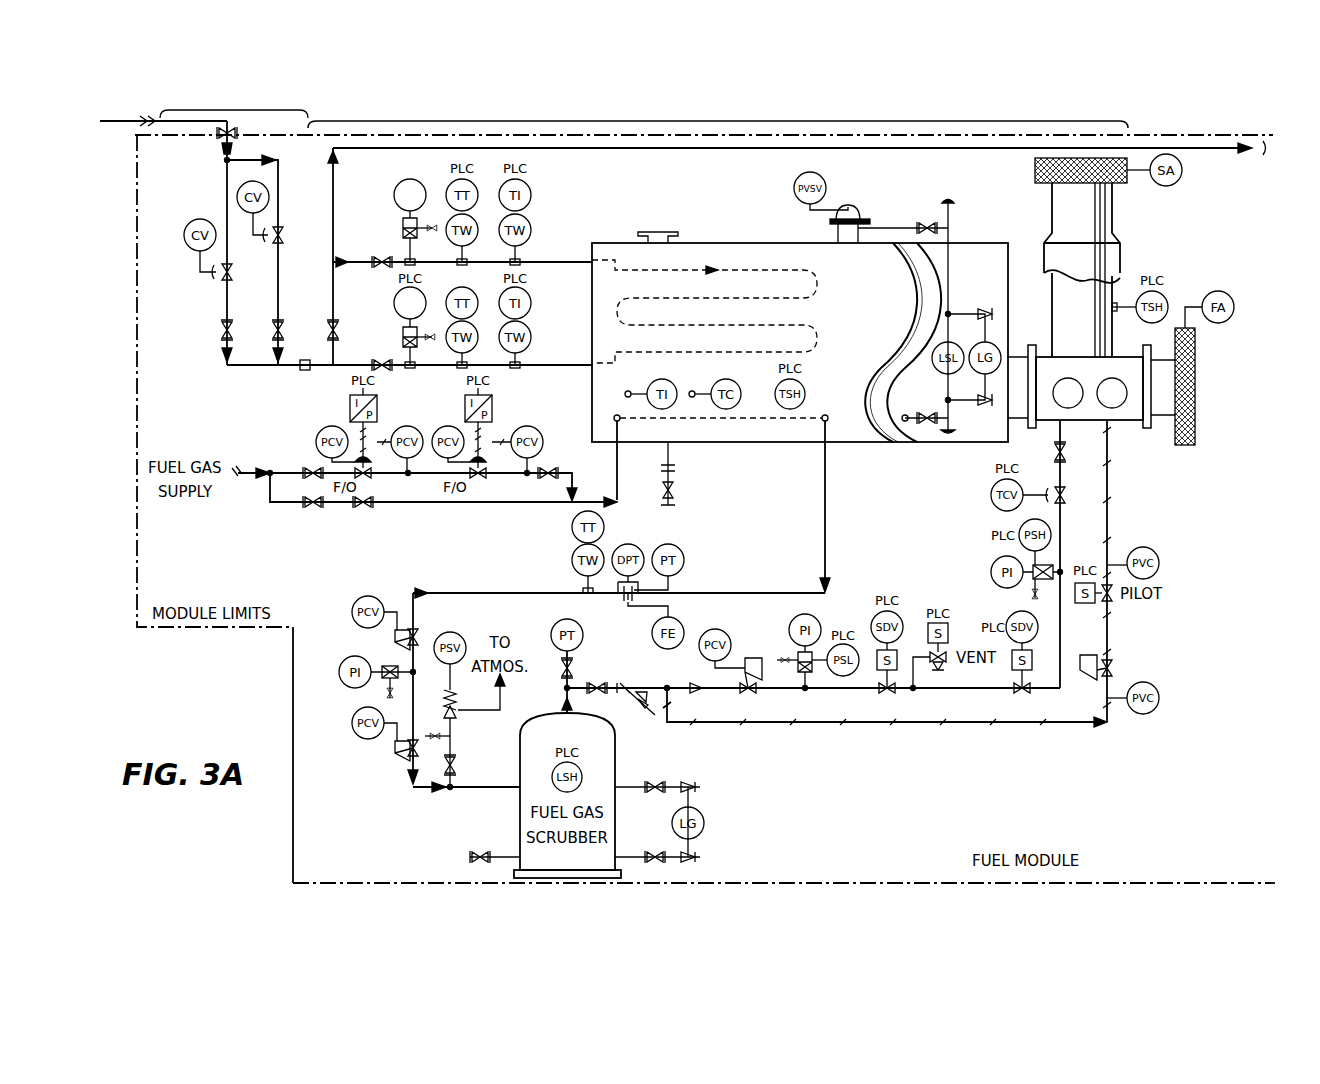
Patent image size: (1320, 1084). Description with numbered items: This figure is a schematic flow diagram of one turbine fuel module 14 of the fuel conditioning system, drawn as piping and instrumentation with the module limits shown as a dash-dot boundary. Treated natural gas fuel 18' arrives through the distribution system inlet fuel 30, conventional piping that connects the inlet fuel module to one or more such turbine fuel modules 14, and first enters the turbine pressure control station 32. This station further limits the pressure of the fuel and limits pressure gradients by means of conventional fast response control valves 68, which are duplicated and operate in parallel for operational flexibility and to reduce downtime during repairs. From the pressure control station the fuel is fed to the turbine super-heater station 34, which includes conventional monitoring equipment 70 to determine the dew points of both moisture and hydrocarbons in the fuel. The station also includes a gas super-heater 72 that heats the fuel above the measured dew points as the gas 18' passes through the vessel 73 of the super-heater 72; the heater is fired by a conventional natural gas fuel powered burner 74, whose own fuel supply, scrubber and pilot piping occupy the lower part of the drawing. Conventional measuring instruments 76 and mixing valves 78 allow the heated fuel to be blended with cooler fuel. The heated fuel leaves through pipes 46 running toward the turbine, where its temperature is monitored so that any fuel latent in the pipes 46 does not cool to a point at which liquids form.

The turbine fuel module 14 is at (1160, 124).
The distribution system inlet fuel 30 is at (126, 122).
The turbine pressure control station 32 is at (230, 110).
The turbine super-heater station 34 is at (737, 119).
The pipes 46 is at (713, 149).
The fast response control valves 68 is at (283, 230).
The monitoring equipment 70 is at (405, 340).
The gas super-heater 72 is at (864, 440).
The vessel 73 is at (695, 248).
The burner 74 is at (1128, 426).
The measuring instruments 76 is at (405, 232).
The mixing valves 78 is at (385, 258).
The fuel 18' is at (704, 304).